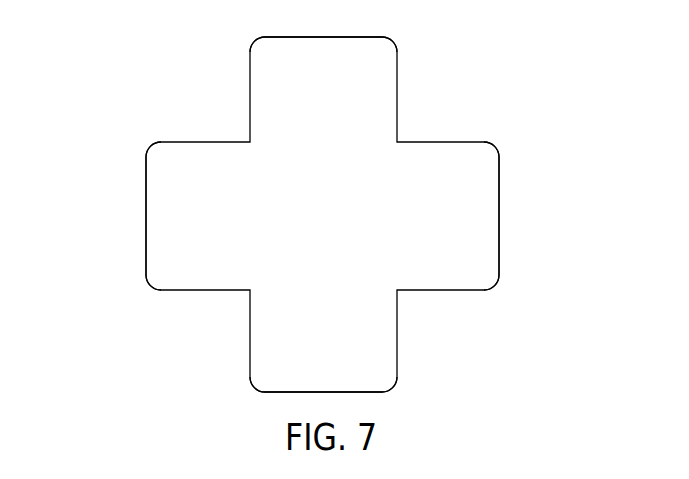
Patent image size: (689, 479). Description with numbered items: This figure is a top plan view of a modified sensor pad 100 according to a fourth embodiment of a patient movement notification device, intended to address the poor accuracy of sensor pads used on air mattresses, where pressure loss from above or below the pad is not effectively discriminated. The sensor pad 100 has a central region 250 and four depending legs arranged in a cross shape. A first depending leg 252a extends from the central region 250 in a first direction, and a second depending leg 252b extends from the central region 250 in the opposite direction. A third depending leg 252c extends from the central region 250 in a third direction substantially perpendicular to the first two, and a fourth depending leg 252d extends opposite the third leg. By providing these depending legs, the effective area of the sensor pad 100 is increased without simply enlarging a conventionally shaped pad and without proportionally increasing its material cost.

The sensor pad 100 is at (128, 126).
The central region 250 is at (333, 204).
The first depending leg 252a is at (257, 63).
The second depending leg 252b is at (383, 365).
The third depending leg 252c is at (173, 277).
The fourth depending leg 252d is at (488, 165).